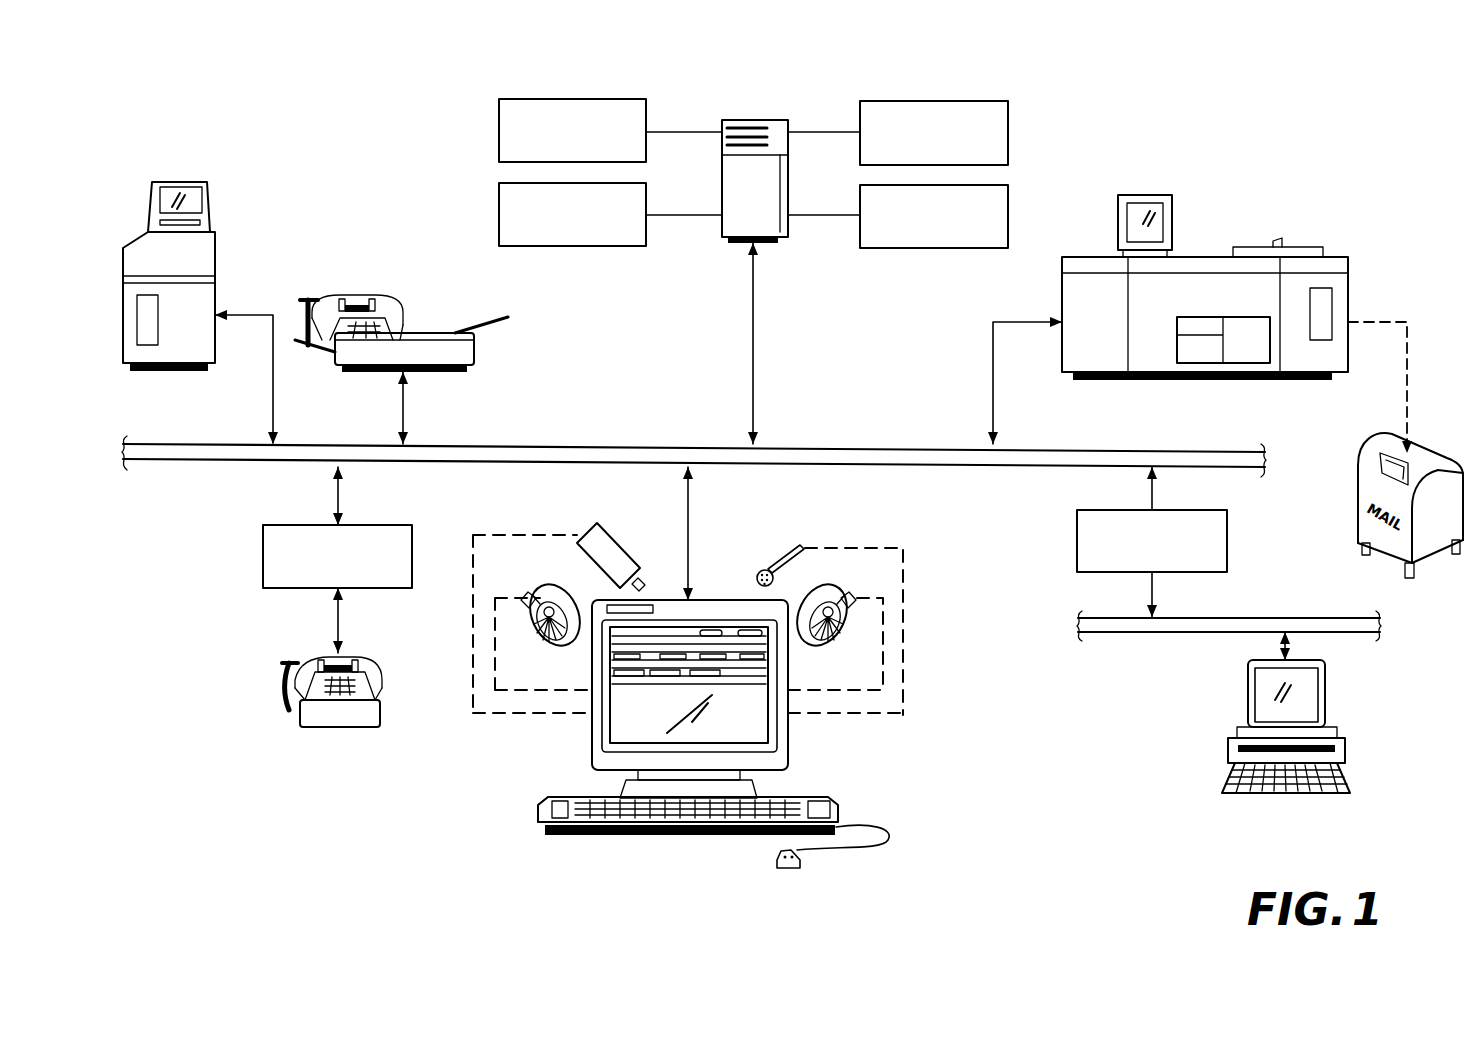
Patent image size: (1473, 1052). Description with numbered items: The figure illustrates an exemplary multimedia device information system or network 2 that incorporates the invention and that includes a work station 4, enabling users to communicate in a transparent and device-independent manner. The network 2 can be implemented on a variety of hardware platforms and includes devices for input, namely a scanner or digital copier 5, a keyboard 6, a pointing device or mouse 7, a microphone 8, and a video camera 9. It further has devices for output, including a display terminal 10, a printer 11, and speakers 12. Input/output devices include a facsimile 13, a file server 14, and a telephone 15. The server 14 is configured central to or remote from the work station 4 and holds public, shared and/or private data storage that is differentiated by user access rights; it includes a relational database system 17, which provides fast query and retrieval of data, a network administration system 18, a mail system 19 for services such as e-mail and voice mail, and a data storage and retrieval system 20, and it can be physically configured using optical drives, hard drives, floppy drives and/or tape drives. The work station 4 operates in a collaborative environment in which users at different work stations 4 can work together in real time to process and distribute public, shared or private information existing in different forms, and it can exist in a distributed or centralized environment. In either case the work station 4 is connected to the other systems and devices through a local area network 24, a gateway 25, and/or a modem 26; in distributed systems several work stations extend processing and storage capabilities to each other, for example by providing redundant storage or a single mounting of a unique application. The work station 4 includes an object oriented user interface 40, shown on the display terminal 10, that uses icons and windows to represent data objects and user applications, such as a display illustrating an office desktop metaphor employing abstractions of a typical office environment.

The multimedia device information system or network 2 is at (318, 113).
The work station 4 is at (533, 765).
The scanner or digital copier 5 is at (215, 300).
The keyboard 6 is at (783, 797).
The pointing device or mouse 7 is at (803, 870).
The microphone 8 is at (787, 558).
The video camera 9 is at (605, 543).
The display terminal 10 is at (187, 182).
The printer 11 is at (1206, 257).
The speakers 12 is at (562, 642).
The facsimile 13 is at (437, 372).
The file server 14 is at (757, 118).
The telephone 15 is at (335, 727).
The relational database system 17 is at (1010, 116).
The network administration system 18 is at (499, 115).
The mail system 19 is at (914, 248).
The data storage and retrieval system 20 is at (586, 246).
The local area network (LAN) 24 is at (832, 444).
The gateway 25 is at (1077, 523).
The modem 26 is at (263, 538).
The object oriented user interface (UI) 40 is at (193, 198).